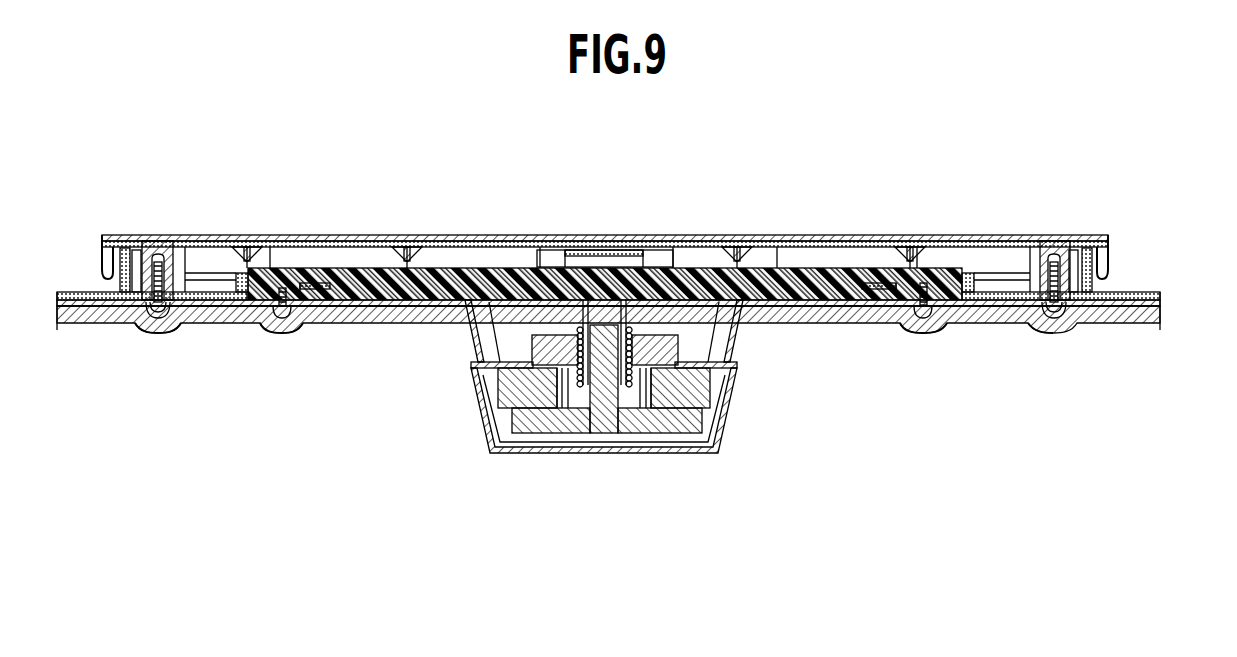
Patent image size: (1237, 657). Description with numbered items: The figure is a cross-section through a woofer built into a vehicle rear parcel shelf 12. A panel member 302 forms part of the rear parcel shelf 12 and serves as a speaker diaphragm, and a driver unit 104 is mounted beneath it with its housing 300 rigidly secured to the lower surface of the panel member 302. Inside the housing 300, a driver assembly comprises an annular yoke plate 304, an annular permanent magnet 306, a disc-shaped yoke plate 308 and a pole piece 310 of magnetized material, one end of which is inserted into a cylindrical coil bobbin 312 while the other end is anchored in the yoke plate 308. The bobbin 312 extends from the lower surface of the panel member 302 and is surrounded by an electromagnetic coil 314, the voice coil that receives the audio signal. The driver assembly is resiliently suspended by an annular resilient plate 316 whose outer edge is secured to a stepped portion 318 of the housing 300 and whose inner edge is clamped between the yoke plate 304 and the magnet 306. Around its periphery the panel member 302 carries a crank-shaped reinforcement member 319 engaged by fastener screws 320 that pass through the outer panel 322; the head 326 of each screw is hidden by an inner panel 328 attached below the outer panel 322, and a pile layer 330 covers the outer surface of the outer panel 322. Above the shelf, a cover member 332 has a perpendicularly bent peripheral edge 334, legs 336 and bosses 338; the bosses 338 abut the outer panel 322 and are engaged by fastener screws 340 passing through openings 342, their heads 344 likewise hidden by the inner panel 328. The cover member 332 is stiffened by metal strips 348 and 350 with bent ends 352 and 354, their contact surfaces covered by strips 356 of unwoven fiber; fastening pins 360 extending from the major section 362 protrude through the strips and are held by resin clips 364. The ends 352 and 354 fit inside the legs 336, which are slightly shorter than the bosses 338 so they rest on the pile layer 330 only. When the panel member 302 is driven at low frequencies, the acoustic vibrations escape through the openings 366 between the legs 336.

The rear parcel shelf 12 is at (1130, 320).
The driver unit 104 is at (598, 398).
The housing 300 is at (484, 440).
The panel member 302 is at (363, 290).
The annular yoke plate 304 is at (556, 340).
The annular permanent magnet 306 is at (500, 390).
The disc-shaped yoke plate 308 is at (668, 420).
The pole piece 310 is at (602, 400).
The coil bobbin 312 is at (632, 326).
The electromagnetic coil 314 is at (722, 452).
The resilient plate 316 is at (470, 340).
The stepped portion 318 is at (478, 366).
The reinforcement member 319 is at (310, 292).
The fastener screws 320 is at (278, 326).
The outer panel 322 is at (1162, 297).
The head 326 is at (925, 325).
The inner panel 328 is at (1162, 315).
The pile layer 330 is at (1010, 268).
The cover member 332 is at (605, 206).
The peripheral edge 334 is at (100, 250).
The legs 336 is at (108, 281).
The bosses 338 is at (156, 245).
The fastener screws 340 is at (158, 325).
The openings 342 is at (140, 316).
The heads 344 is at (172, 322).
The metal strip 348 is at (478, 240).
The metal strip 350 is at (605, 252).
The bent end 352 is at (125, 250).
The bent end 354 is at (580, 250).
The strips of unwoven fiber 356 is at (407, 247).
The fastening pins 360 is at (248, 250).
The major section 362 is at (366, 245).
The resin clips 364 is at (256, 258).
The openings 366 is at (205, 277).